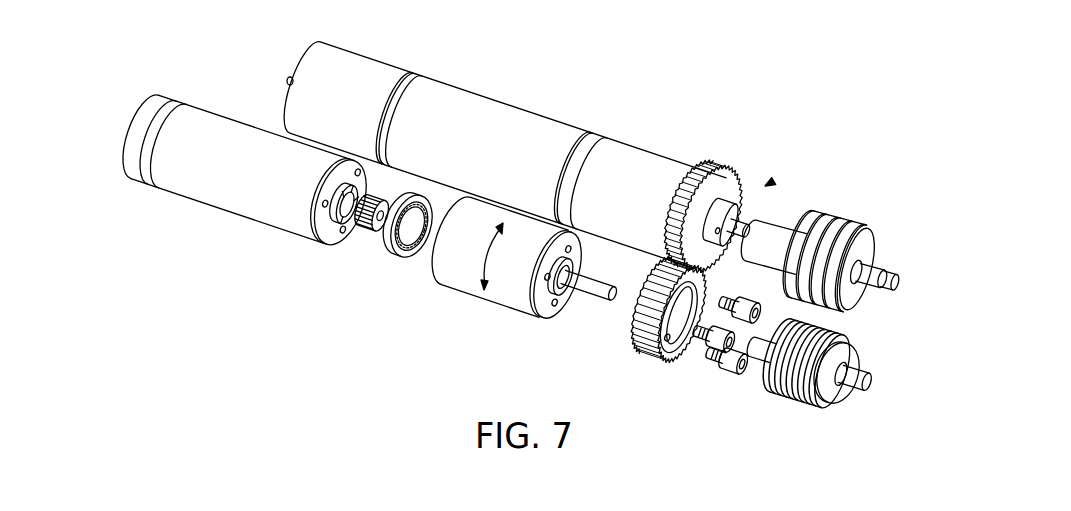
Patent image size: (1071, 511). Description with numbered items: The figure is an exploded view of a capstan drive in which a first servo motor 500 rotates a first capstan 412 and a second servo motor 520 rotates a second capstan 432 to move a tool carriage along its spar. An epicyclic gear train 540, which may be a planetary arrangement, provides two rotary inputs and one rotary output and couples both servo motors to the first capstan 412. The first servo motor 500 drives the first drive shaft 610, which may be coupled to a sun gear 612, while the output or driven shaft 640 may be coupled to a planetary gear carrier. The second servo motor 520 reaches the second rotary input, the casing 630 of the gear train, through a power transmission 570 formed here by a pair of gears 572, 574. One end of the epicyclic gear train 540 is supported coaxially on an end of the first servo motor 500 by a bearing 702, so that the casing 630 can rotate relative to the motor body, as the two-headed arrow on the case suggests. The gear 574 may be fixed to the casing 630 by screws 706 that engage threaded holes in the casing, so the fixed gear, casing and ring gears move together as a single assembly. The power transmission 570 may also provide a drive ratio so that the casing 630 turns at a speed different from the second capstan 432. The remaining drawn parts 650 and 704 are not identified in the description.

The first servo motor 500 is at (228, 216).
The second servo motor 520 is at (513, 102).
The epicyclic gear train 540 is at (436, 312).
The power transmission 570 is at (770, 183).
The gear 572 is at (729, 185).
The fixed gear 574 is at (672, 360).
The first drive shaft 610 is at (348, 240).
The sun gear 612 is at (365, 229).
The second drive shaft (casing of the gear train) 630 is at (508, 310).
The output or driven shaft 640 is at (593, 297).
The shaft pin 650 is at (746, 222).
The bearing 702 is at (400, 258).
The mounting hole 704 is at (572, 252).
The screws 706 is at (752, 303).
The first capstan 412 is at (847, 393).
The second capstan 432 is at (873, 248).